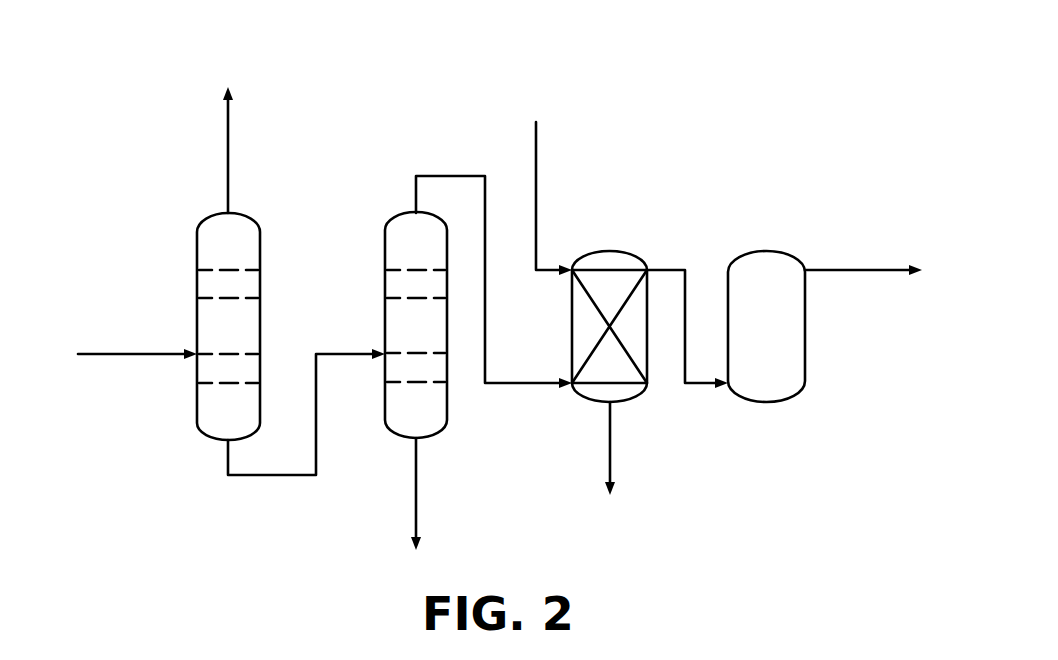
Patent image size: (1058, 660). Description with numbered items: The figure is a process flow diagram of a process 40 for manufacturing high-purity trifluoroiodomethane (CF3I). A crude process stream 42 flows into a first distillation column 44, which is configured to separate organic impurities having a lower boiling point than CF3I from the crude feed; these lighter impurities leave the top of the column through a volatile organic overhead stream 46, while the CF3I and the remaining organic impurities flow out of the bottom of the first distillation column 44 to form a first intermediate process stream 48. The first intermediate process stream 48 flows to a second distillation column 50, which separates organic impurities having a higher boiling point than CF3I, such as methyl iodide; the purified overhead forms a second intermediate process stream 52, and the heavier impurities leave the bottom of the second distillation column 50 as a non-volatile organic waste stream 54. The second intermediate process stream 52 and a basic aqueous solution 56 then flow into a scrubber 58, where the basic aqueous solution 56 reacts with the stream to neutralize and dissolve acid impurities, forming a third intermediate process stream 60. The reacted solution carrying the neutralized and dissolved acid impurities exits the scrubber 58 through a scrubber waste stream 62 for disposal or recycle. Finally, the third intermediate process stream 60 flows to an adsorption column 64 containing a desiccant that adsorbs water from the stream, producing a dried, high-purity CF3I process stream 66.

The process 40 is at (154, 124).
The crude process stream 42 is at (140, 354).
The first distillation column 44 is at (200, 222).
The volatile organic overhead stream 46 is at (228, 158).
The first intermediate process stream 48 is at (340, 354).
The second distillation column 50 is at (385, 222).
The second intermediate process stream 52 is at (465, 176).
The non-volatile organic waste stream 54 is at (416, 490).
The basic aqueous solution 56 is at (536, 150).
The scrubber 58 is at (608, 252).
The third intermediate process stream 60 is at (668, 270).
The scrubber waste stream 62 is at (610, 442).
The adsorption column 64 is at (748, 252).
The high-purity CF3I process stream 66 is at (865, 270).